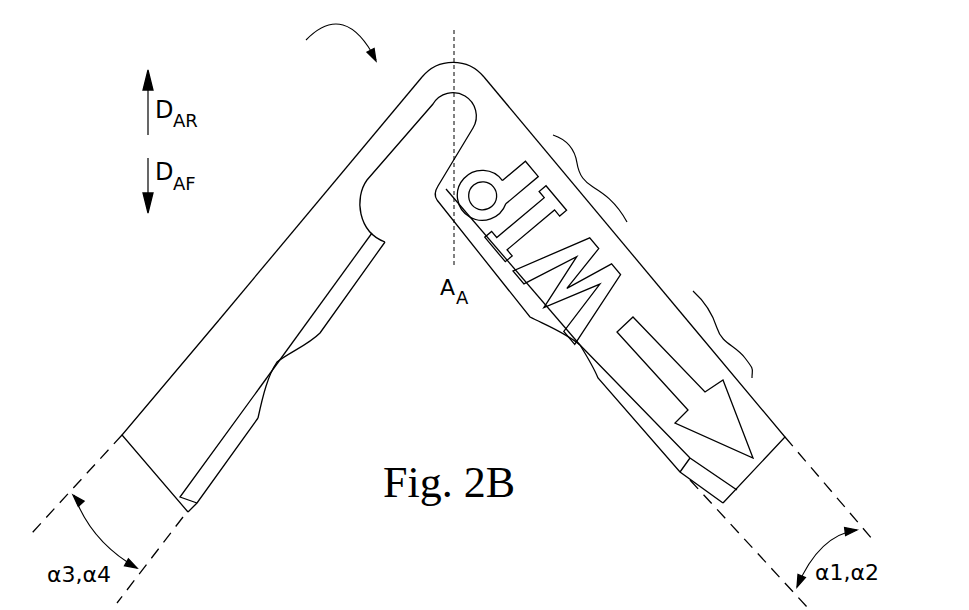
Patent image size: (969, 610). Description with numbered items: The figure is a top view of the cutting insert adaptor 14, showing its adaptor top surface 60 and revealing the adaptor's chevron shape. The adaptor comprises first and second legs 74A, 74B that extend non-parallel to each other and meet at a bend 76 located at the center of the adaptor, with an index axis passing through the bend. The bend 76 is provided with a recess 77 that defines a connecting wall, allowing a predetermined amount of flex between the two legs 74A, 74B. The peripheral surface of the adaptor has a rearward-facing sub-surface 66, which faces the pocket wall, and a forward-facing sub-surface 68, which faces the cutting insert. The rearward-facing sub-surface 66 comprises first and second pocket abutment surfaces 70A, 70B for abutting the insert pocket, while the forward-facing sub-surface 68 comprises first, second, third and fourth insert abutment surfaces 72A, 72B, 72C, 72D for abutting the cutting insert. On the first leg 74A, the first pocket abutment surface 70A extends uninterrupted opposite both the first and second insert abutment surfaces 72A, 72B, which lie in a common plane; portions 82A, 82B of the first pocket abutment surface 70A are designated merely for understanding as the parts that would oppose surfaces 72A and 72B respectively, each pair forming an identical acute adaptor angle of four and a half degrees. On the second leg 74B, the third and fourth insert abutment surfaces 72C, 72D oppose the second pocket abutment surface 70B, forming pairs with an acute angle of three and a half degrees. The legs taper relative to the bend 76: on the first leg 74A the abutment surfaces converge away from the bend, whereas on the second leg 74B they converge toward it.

The cutting insert adaptor 14 is at (461, 315).
The adaptor top surface 60 is at (505, 133).
The rearward-facing sub-surface 66 is at (332, 48).
The forward-facing sub-surface 68 is at (287, 520).
The first pocket abutment surface 70A is at (653, 270).
The second pocket abutment surface 70B is at (180, 358).
The first insert abutment surface 72A is at (653, 450).
The second insert abutment surface 72B is at (513, 303).
The third insert abutment surface 72C is at (353, 295).
The fourth insert abutment surface 72D is at (247, 445).
The first leg 74A is at (662, 238).
The second leg 74B is at (223, 287).
The bend 76 is at (457, 63).
The recess 77 is at (417, 207).
The opposing portion of the first pocket abutment surface 82A is at (734, 334).
The opposing portion of the first pocket abutment surface 82B is at (601, 178).